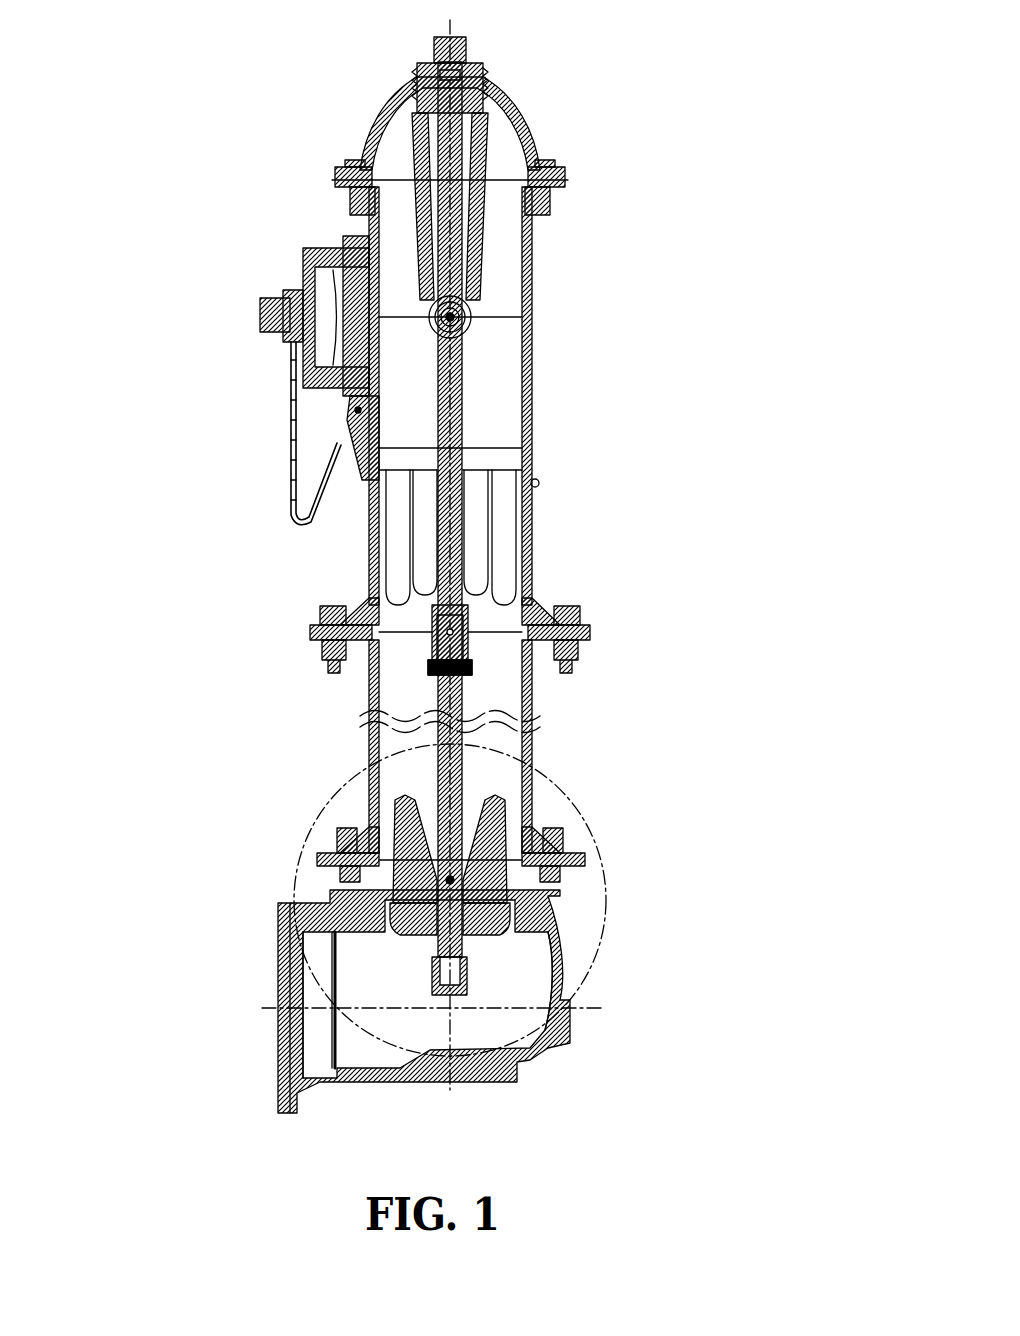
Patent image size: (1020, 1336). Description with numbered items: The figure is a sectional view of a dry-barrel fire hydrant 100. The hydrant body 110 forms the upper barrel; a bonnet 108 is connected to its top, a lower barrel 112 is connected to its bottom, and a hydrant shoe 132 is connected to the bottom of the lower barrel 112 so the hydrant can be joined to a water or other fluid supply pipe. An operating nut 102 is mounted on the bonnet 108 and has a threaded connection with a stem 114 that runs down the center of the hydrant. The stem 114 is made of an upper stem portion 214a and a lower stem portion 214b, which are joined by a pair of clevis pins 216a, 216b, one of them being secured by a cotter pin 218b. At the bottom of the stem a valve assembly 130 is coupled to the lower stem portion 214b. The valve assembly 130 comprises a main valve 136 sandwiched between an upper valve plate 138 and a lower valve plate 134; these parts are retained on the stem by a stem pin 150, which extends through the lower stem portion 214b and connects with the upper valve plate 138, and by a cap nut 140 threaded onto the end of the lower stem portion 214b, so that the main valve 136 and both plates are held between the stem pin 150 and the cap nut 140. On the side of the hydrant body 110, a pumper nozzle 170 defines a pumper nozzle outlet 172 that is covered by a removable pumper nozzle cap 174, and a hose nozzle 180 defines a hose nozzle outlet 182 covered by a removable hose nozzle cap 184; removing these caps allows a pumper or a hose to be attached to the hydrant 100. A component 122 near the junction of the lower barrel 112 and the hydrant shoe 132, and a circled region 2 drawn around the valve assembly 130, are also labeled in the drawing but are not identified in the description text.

The hydrant 100 is at (205, 183).
The operating nut 102 is at (470, 50).
The bonnet 108 is at (536, 128).
The hydrant body 110 is at (535, 277).
The lower barrel 112 is at (545, 775).
The stem 114 is at (480, 424).
The lower flange 122 is at (540, 805).
The valve assembly 130 is at (479, 1008).
The hydrant shoe 132 is at (540, 1047).
The lower valve plate 134 is at (500, 950).
The main valve 136 is at (385, 935).
The upper valve plate 138 is at (372, 830).
The cap nut 140 is at (456, 997).
The stem pin 150 is at (377, 844).
The pumper nozzle 170 is at (332, 252).
The pumper nozzle outlet 172 is at (306, 285).
The pumper nozzle cap 174 is at (268, 320).
The hose nozzle 180 is at (483, 340).
The hose nozzle outlet 182 is at (484, 326).
The hose nozzle cap 184 is at (485, 308).
The detail section circle 2 is at (300, 840).
The upper stem portion 214a is at (462, 505).
The lower stem portion 214b is at (482, 705).
The clevis pin 216a is at (440, 620).
The clevis pin 216b is at (440, 675).
The cotter pin 218b is at (463, 660).